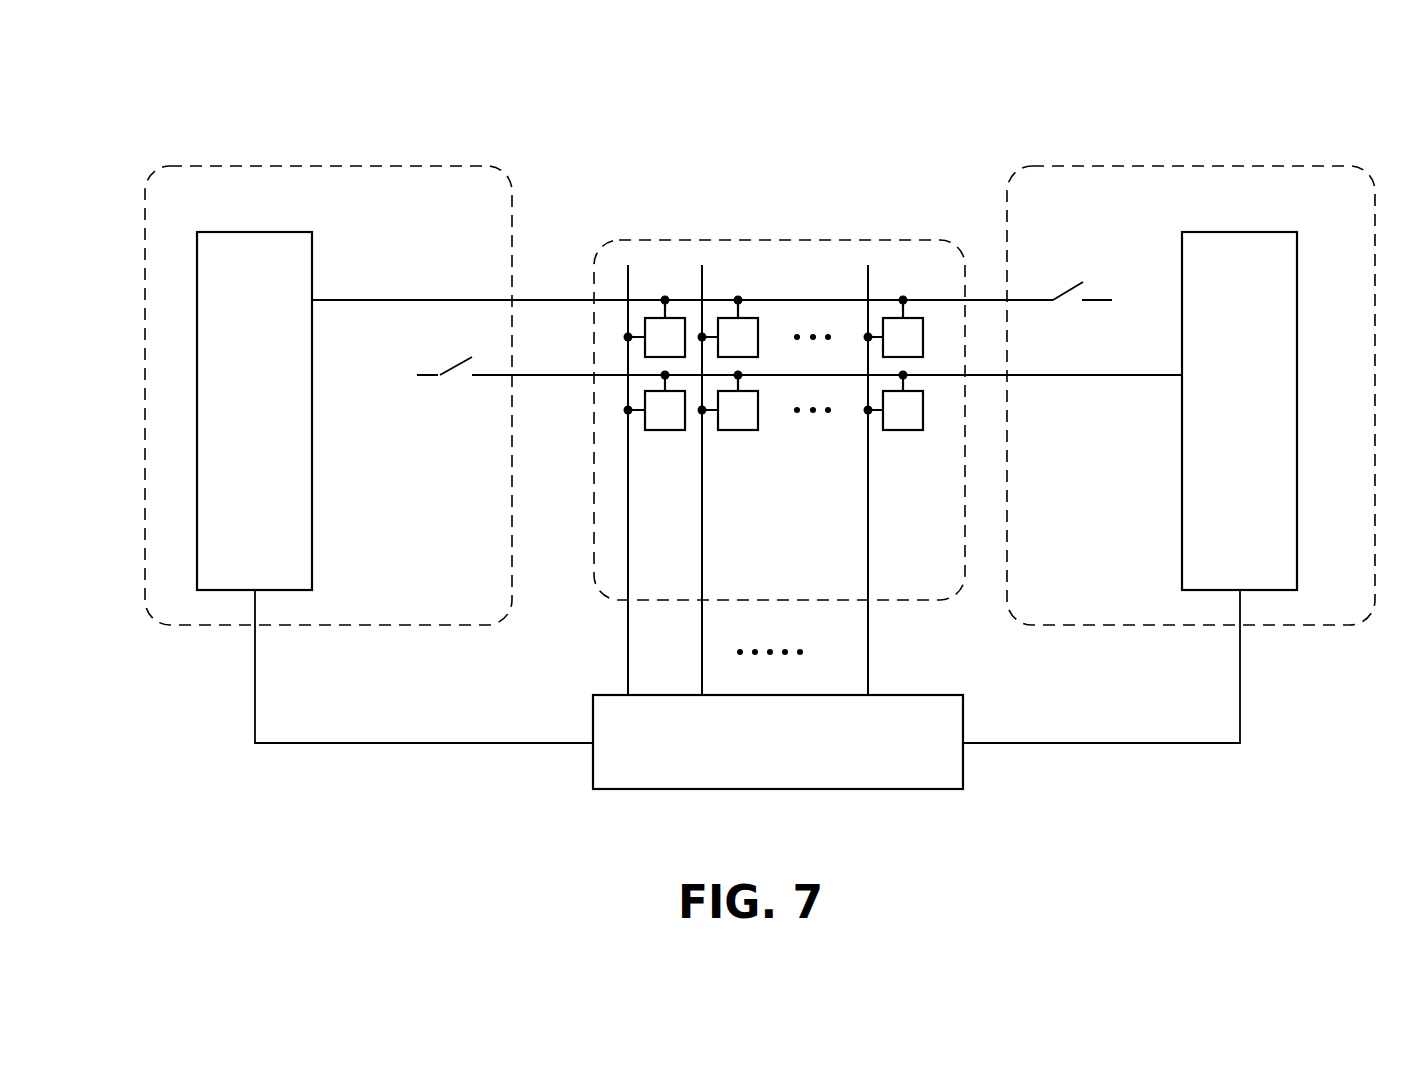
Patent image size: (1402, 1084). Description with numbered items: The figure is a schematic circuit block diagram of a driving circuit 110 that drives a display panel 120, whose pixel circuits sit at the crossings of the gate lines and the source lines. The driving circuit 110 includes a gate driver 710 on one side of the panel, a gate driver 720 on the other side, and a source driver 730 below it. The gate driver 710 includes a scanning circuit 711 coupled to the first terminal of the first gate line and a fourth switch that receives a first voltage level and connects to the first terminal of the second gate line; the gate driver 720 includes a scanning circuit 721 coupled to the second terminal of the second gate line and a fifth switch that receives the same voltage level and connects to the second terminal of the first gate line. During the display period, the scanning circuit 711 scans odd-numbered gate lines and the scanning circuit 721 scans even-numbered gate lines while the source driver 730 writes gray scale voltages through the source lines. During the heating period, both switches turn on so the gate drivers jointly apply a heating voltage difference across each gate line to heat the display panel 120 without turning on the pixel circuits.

The driving circuit 110 is at (158, 758).
The display panel 120 is at (778, 240).
The gate driver 710 is at (328, 166).
The scanning circuit 711 is at (254, 232).
The gate driver 720 is at (1190, 166).
The scanning circuit 721 is at (1238, 232).
The source driver 730 is at (777, 790).